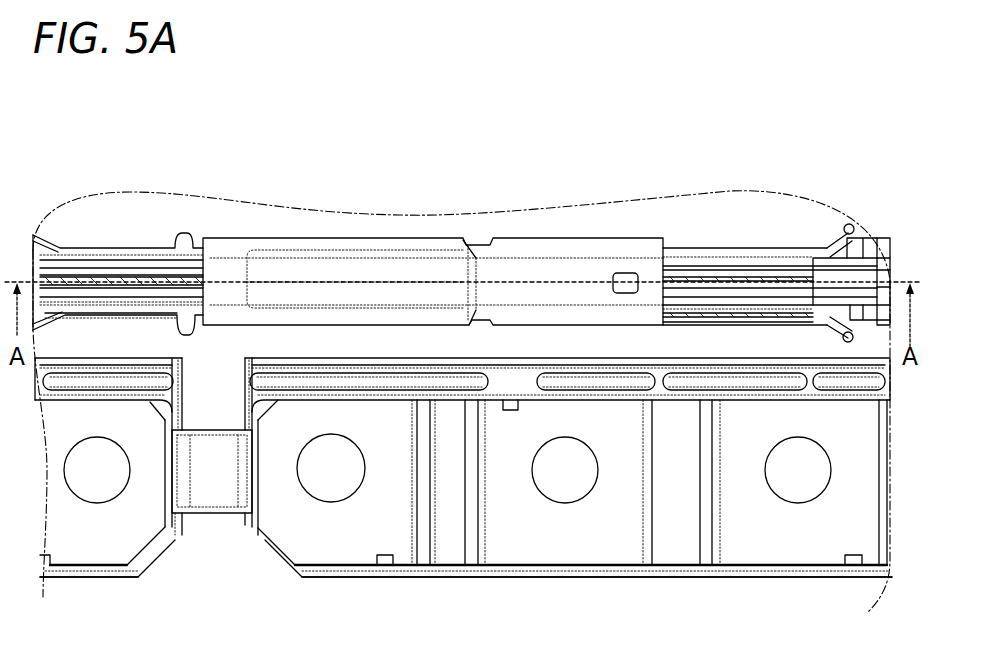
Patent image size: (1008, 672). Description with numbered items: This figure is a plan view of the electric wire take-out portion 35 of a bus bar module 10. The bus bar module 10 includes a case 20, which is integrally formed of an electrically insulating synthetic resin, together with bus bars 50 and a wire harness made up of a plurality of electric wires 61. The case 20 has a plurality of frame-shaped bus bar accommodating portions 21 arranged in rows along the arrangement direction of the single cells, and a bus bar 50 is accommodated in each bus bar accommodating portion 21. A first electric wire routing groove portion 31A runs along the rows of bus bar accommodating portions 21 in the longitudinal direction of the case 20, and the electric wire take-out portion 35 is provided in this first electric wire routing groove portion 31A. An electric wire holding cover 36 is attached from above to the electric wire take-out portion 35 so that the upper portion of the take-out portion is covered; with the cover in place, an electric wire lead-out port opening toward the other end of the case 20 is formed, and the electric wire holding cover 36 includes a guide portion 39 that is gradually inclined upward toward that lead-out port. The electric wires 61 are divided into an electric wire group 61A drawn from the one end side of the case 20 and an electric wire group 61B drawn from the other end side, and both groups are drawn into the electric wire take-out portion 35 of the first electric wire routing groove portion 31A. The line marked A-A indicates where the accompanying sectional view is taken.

The bus bar module 10 is at (430, 578).
The case 20 is at (318, 578).
The bus bar accommodating portion 21 is at (73, 579).
The first electric wire routing groove portion 31A is at (107, 262).
The electric wire take-out portion 35 is at (586, 332).
The electric wire holding cover 36 is at (518, 240).
The guide portion 39 is at (377, 268).
The bus bar 50 is at (622, 547).
The electric wire 61 is at (746, 255).
The electric wire group 61A is at (150, 275).
The electric wire group 61B is at (845, 232).